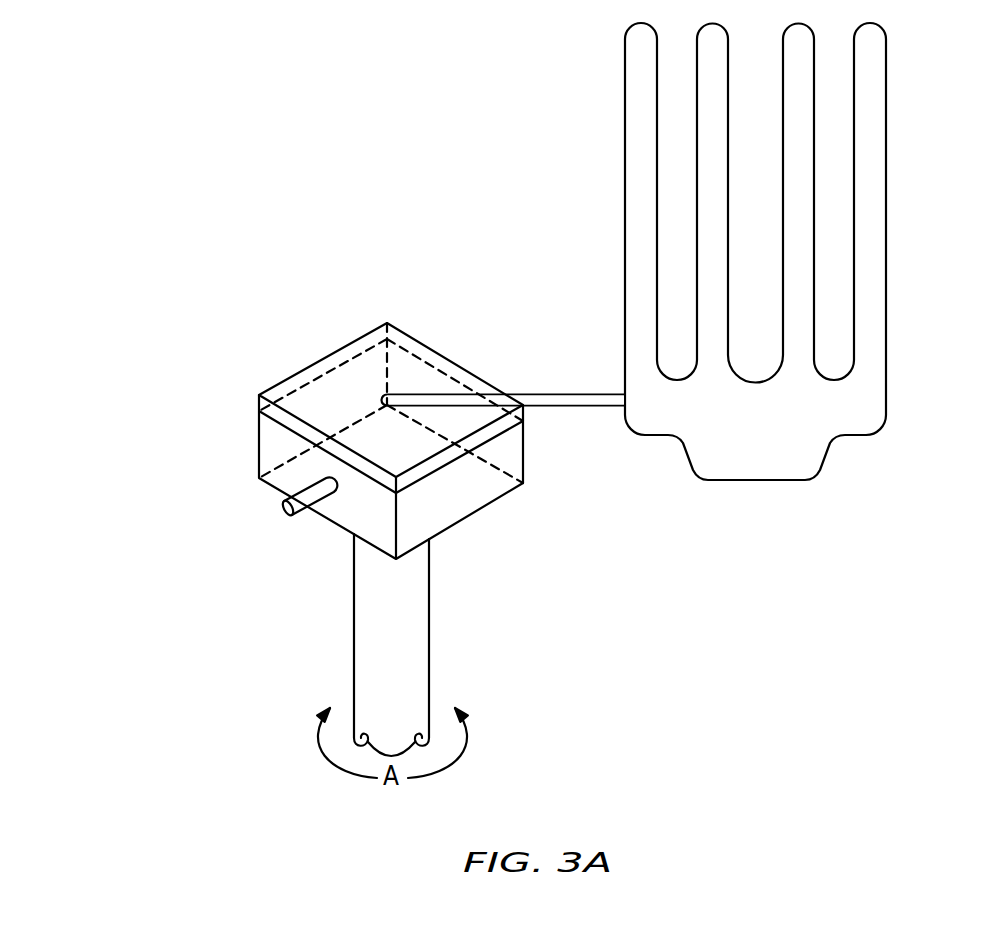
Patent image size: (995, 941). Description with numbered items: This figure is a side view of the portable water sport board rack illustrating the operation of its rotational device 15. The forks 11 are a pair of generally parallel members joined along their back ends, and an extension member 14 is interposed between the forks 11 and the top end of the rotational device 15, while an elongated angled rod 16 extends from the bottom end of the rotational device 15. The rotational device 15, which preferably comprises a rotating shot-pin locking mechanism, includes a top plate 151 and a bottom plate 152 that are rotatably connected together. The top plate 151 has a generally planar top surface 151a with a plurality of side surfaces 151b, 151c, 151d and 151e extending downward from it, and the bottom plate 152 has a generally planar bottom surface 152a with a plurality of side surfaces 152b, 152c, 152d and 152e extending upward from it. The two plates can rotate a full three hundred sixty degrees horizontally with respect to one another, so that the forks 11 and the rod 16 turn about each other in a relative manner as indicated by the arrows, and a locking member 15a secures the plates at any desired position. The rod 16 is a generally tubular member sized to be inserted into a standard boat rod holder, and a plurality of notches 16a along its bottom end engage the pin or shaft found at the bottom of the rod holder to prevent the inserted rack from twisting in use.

The forks 11 is at (775, 437).
The extension member 14 is at (575, 398).
The rotational device 15 is at (376, 442).
The locking member 15a is at (288, 508).
The top plate 151 is at (359, 413).
The top surface 151a is at (420, 451).
The side surface of top plate 151b is at (293, 425).
The side surface of top plate 151c is at (460, 455).
The side surface of top plate 151d is at (458, 358).
The side surface of top plate 151e is at (327, 358).
The bottom plate 152 is at (399, 506).
The bottom surface 152a is at (460, 523).
The side surface of bottom plate 152b is at (367, 510).
The side surface of bottom plate 152c is at (526, 482).
The side surface of bottom plate 152d is at (526, 443).
The side surface of bottom plate 152e is at (255, 465).
The angled rod 16 is at (397, 645).
The notches 16a is at (422, 740).